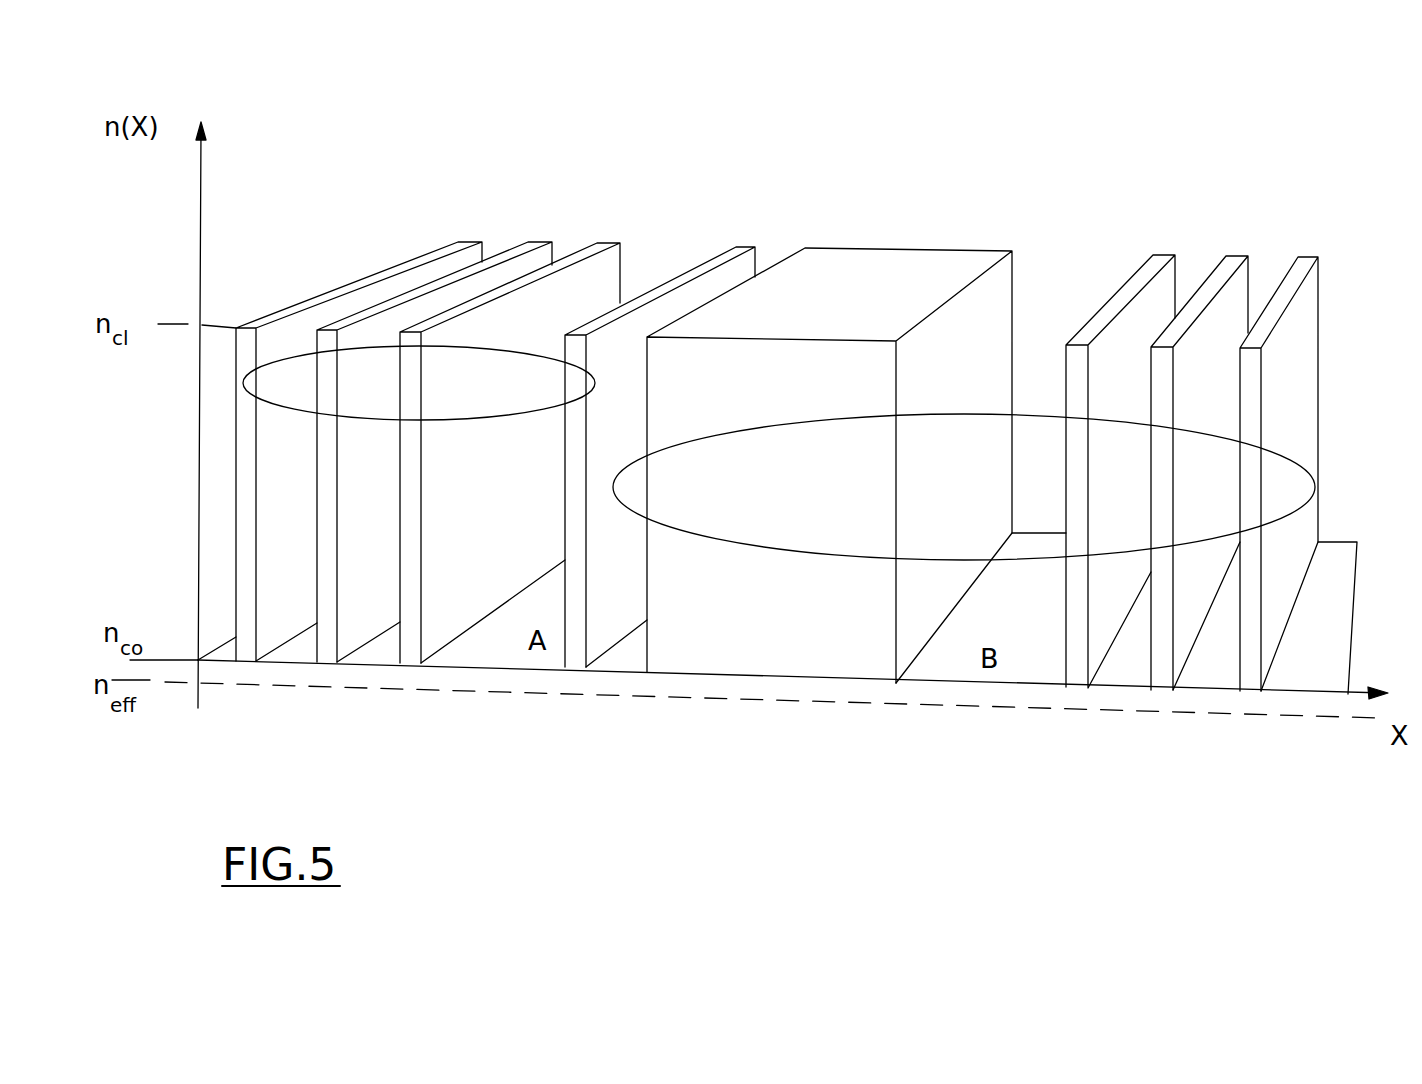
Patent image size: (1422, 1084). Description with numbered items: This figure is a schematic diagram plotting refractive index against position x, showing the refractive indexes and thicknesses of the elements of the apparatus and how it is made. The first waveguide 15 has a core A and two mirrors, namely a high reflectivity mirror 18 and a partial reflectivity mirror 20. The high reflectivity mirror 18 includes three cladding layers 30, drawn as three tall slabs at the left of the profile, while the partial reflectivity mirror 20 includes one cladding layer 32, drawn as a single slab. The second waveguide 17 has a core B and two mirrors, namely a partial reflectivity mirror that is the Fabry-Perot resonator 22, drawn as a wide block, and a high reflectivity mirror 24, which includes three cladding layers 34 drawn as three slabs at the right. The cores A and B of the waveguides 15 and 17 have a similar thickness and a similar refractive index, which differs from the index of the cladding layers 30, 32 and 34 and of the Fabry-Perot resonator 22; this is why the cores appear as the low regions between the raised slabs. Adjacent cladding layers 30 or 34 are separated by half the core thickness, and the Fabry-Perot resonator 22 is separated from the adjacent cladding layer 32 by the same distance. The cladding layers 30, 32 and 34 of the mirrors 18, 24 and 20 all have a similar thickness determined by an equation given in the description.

The first waveguide 15 is at (523, 353).
The second waveguide 17 is at (975, 415).
The high reflectivity mirror 18 is at (426, 455).
The partial reflectivity mirror 20 is at (662, 454).
The Fabry-Perot resonator 22 is at (913, 272).
The high reflectivity mirror 24 is at (1192, 477).
The cladding layers 30 is at (585, 247).
The cladding layer 32 is at (713, 263).
The cladding layers 34 is at (1297, 273).